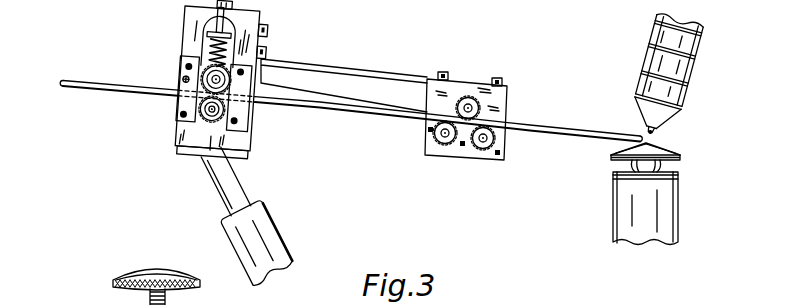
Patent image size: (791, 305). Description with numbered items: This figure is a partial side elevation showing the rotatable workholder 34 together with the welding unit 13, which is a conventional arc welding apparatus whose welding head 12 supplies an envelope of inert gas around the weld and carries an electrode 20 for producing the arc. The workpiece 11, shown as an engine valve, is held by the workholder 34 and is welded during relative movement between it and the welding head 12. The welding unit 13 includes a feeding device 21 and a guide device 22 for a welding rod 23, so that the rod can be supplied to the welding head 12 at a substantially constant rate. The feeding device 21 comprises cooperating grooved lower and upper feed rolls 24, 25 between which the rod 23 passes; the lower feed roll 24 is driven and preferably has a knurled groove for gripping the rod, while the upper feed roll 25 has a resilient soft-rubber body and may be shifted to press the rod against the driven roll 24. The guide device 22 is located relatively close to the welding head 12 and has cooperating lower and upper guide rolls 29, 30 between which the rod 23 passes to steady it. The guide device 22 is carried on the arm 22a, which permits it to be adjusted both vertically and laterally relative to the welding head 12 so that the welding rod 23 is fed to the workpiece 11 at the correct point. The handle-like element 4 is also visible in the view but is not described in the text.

The handle 4 is at (211, 140).
The workpiece 11 is at (680, 157).
The welding head 12 is at (691, 88).
The welding unit 13 is at (566, 64).
The electrode 20 is at (654, 137).
The feeding device 21 is at (245, 87).
The guide device 22 is at (507, 113).
The arm 22a is at (398, 74).
The welding rod 23 is at (564, 135).
The lower feed roll 24 is at (199, 109).
The upper feed roll 25 is at (202, 77).
The lower guide roll 29 is at (433, 133).
The upper guide roll 30 is at (468, 96).
The workholder 34 is at (678, 175).